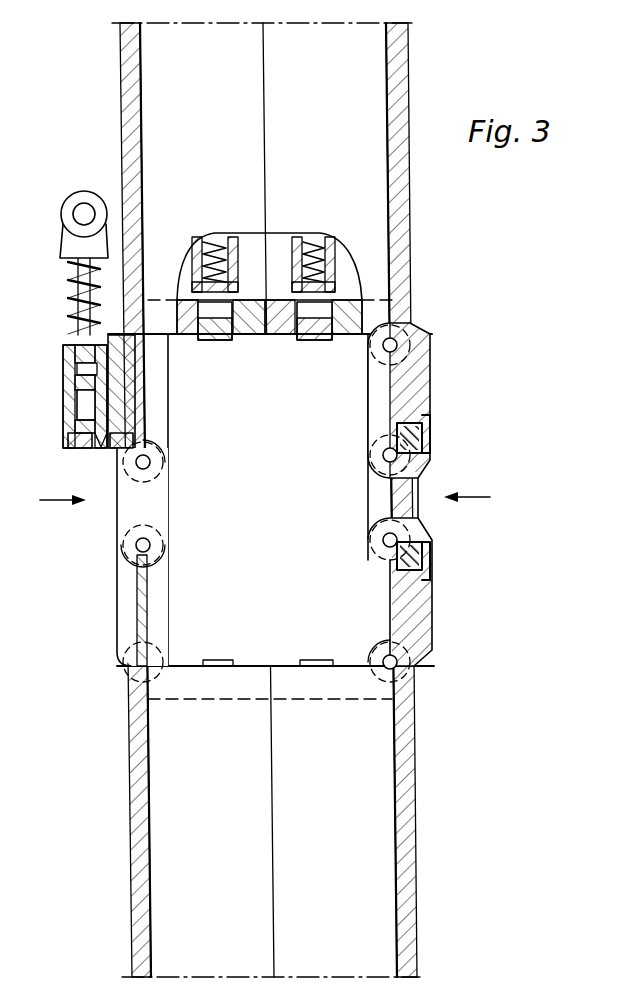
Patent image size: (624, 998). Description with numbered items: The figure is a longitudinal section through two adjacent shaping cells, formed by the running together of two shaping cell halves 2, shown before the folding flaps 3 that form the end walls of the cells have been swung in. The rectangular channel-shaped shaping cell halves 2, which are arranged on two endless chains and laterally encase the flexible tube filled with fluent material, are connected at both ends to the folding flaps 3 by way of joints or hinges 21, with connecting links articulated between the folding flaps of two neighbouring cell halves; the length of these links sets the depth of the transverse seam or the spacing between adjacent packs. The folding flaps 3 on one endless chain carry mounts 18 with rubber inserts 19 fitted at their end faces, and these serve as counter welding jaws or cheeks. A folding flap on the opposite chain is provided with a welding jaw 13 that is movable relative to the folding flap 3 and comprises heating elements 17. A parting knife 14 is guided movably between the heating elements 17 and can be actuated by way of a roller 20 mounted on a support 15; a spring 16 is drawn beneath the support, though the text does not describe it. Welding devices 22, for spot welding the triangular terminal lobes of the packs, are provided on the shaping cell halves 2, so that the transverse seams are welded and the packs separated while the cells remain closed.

The shaping cell half 2 is at (128, 94).
The folding flap 3 is at (140, 386).
The welding jaw 13 is at (68, 368).
The parting knife 14 is at (76, 405).
The support 15 is at (70, 243).
The spring 16 is at (70, 290).
The heating element 17 is at (118, 446).
The mount 18 is at (415, 389).
The rubber insert 19 is at (424, 437).
The roller 20 is at (70, 202).
The hinge 21 is at (150, 540).
The welding device 22 is at (300, 338).